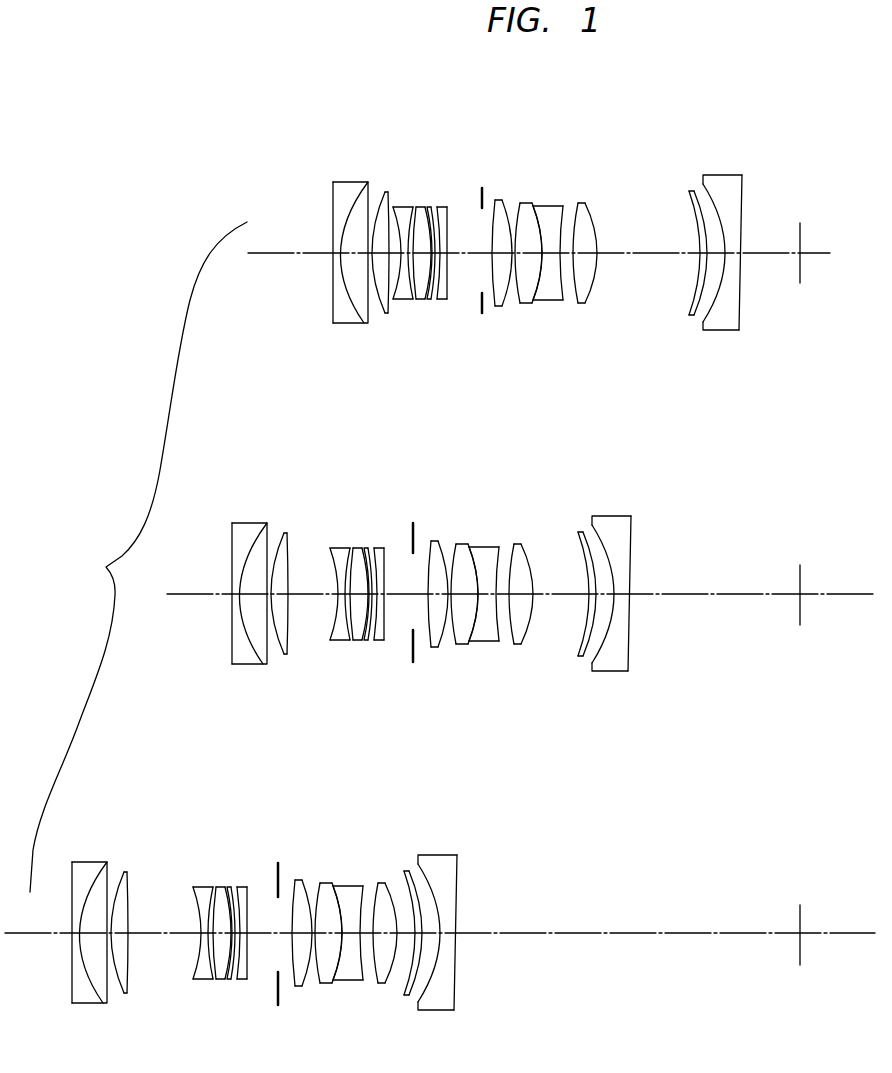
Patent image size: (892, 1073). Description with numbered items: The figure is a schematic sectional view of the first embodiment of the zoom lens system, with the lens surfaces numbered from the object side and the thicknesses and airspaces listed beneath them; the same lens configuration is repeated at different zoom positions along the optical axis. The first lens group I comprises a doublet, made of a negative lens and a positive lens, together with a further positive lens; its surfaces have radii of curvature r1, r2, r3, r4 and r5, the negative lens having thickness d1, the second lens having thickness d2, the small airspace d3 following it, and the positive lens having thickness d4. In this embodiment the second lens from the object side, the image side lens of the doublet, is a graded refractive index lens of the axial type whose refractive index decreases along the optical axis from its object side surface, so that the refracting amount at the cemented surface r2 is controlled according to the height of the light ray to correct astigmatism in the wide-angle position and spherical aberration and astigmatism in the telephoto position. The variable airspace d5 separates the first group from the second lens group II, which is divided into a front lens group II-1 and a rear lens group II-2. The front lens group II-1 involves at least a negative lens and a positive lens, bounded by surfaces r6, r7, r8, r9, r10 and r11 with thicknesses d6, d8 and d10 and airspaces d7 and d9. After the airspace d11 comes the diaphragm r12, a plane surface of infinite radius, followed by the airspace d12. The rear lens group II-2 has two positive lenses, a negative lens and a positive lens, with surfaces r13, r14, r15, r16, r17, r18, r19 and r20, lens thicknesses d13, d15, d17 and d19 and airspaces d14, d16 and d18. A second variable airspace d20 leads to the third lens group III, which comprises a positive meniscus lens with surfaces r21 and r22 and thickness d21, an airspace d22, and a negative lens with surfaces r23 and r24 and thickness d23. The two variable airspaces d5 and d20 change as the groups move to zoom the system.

The first lens group I is at (385, 420).
The second lens group II is at (602, 420).
The front lens group II-1 is at (452, 386).
The rear lens group II-2 is at (600, 386).
The third lens group III is at (755, 420).
The lens surface radius of curvature r1 is at (333, 183).
The lens surface radius of curvature r2 is at (356, 200).
The lens surface radius of curvature r3 is at (372, 198).
The lens surface radius of curvature r4 is at (380, 192).
The lens surface radius of curvature r5 is at (390, 204).
The lens surface radius of curvature r6 is at (398, 206).
The lens surface radius of curvature r7 is at (414, 206).
The lens surface radius of curvature r8 is at (423, 206).
The lens surface radius of curvature r9 is at (432, 206).
The lens surface radius of curvature r10 is at (440, 206).
The lens surface radius of curvature r11 is at (448, 206).
The diaphragm r12 is at (481, 188).
The lens surface radius of curvature r13 is at (494, 200).
The lens surface radius of curvature r14 is at (503, 200).
The lens surface radius of curvature r15 is at (519, 203).
The lens surface radius of curvature r16 is at (532, 203).
The lens surface radius of curvature r17 is at (537, 206).
The lens surface radius of curvature r18 is at (560, 206).
The lens surface radius of curvature r19 is at (578, 203).
The lens surface radius of curvature r20 is at (595, 203).
The lens surface radius of curvature r21 is at (690, 212).
The lens surface radius of curvature r22 is at (697, 200).
The lens surface radius of curvature r23 is at (708, 205).
The lens surface radius of curvature r24 is at (742, 180).
The lens thickness d1 is at (342, 257).
The lens thickness d2 is at (372, 248).
The airspace d3 is at (378, 240).
The lens thickness d4 is at (390, 300).
The variable airspace d5 is at (396, 246).
The lens thickness d6 is at (404, 296).
The airspace d7 is at (420, 248).
The lens thickness d8 is at (418, 300).
The airspace d9 is at (436, 299).
The lens thickness d10 is at (441, 299).
The airspace d11 is at (462, 255).
The airspace d12 is at (487, 300).
The lens thickness d13 is at (498, 306).
The airspace d14 is at (513, 304).
The lens thickness d15 is at (527, 303).
The airspace d16 is at (543, 250).
The lens thickness d17 is at (547, 301).
The airspace d18 is at (570, 302).
The lens thickness d19 is at (596, 300).
The variable airspace d20 is at (614, 256).
The lens thickness d21 is at (705, 258).
The airspace d22 is at (725, 252).
The lens thickness d23 is at (733, 257).